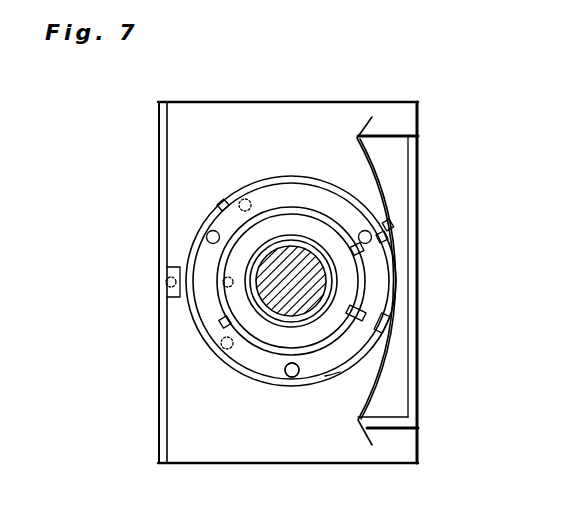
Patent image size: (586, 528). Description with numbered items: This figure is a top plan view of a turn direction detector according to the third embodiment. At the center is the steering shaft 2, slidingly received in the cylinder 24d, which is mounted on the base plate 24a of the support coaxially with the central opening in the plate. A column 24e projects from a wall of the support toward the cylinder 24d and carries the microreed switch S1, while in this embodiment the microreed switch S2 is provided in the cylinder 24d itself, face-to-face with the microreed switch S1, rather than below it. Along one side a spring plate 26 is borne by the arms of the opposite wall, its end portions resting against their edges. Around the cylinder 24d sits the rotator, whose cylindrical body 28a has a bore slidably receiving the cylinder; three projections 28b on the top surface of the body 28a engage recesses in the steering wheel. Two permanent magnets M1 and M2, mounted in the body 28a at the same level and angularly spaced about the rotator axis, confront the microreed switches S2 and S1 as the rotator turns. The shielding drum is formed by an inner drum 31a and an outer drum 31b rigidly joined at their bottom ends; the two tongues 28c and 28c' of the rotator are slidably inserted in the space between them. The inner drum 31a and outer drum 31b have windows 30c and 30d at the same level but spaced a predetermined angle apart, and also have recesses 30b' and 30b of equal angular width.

The steering shaft 2 is at (300, 265).
The base plate 24a is at (405, 100).
The cylinder 24d is at (285, 215).
The column 24e is at (171, 267).
The spring plate 26 is at (373, 170).
The cylindrical body 28a is at (350, 340).
The projections 28b is at (208, 233).
The tongue 28c is at (363, 281).
The tongue 28c' is at (444, 318).
The recess 30b is at (443, 222).
The recess 30b' is at (450, 238).
The window 30c is at (222, 326).
The window 30d is at (221, 202).
The inner drum 31a is at (310, 353).
The outer drum 31b is at (333, 380).
The permanent magnet M1 is at (222, 350).
The permanent magnet M2 is at (247, 198).
The microreed switch S1 is at (166, 283).
The microreed switch S2 is at (223, 285).